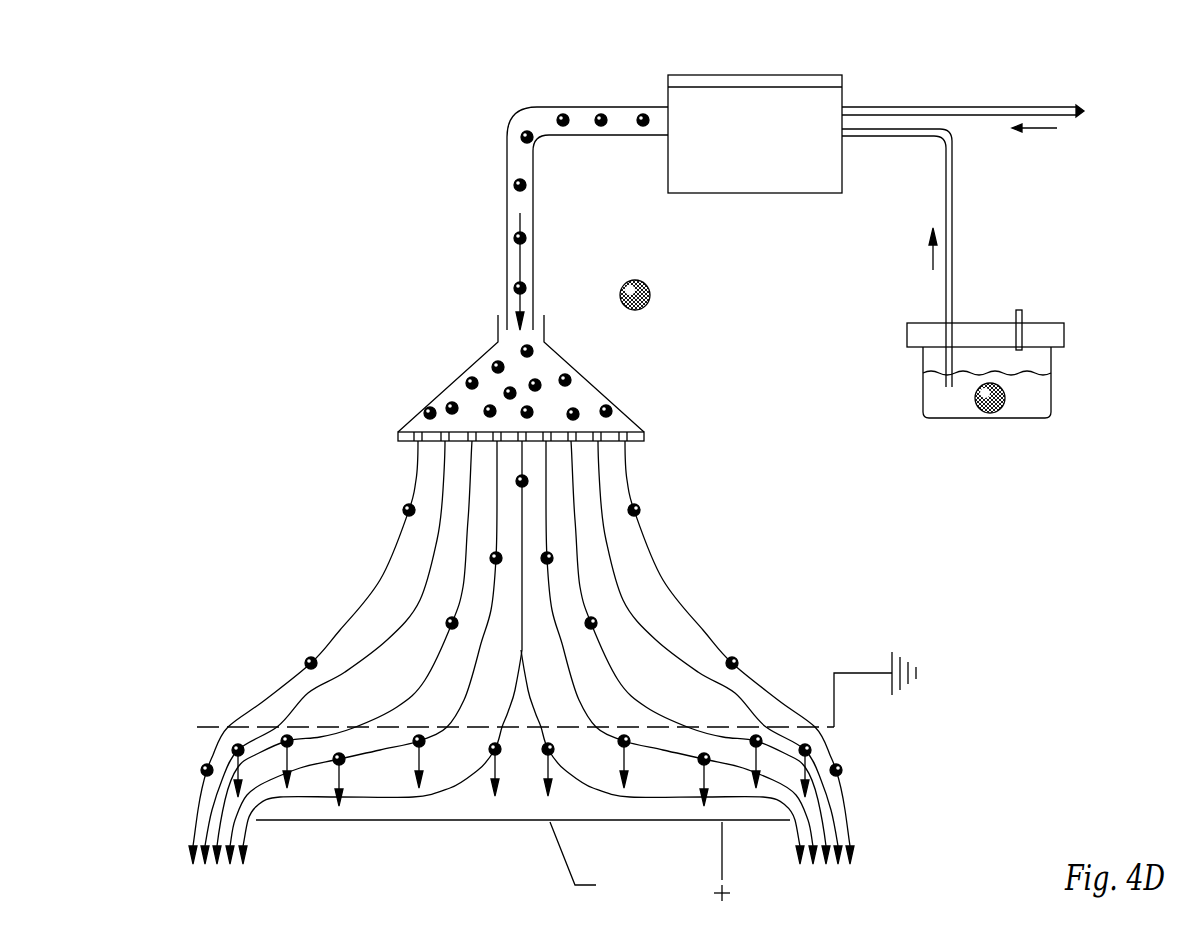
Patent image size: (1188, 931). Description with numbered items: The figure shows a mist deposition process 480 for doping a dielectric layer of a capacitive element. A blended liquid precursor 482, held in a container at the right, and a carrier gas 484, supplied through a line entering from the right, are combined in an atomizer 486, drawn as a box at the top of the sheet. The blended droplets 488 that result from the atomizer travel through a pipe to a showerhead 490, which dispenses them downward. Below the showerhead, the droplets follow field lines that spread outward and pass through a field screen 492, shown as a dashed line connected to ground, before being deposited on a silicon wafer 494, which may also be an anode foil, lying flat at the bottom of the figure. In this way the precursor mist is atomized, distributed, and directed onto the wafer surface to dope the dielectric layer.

The mist deposition process 480 is at (263, 88).
The blended liquid precursor 482 is at (1053, 385).
The carrier gas 484 is at (1025, 75).
The atomizer 486 is at (758, 75).
The blended droplets 488 is at (706, 328).
The showerhead 490 is at (787, 421).
The field screen 492 is at (968, 753).
The silicon wafer 494 is at (458, 862).